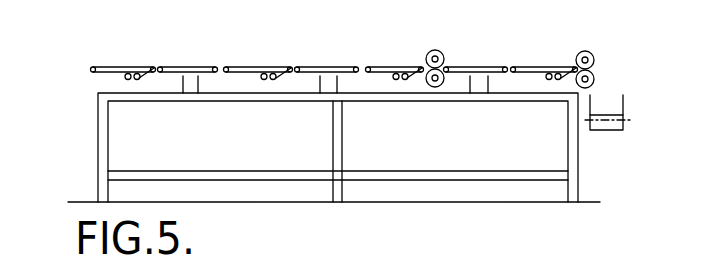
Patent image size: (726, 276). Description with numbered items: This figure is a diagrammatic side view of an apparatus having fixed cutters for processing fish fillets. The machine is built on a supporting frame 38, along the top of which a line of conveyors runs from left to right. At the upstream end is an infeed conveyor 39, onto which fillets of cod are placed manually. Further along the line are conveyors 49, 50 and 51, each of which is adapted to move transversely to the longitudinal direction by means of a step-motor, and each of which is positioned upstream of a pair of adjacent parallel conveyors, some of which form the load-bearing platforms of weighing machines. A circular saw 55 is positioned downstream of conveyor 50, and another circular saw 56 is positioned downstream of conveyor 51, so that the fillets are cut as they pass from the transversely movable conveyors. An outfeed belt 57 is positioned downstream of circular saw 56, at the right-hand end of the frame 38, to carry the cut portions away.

The supporting frame 38 is at (97, 152).
The infeed conveyor 39 is at (105, 73).
The transversely movable conveyor 49 is at (262, 68).
The transversely movable conveyor 50 is at (400, 67).
The transversely movable conveyor 51 is at (517, 68).
The circular saw 55 is at (445, 57).
The circular saw 56 is at (593, 54).
The outfeed belt 57 is at (609, 132).